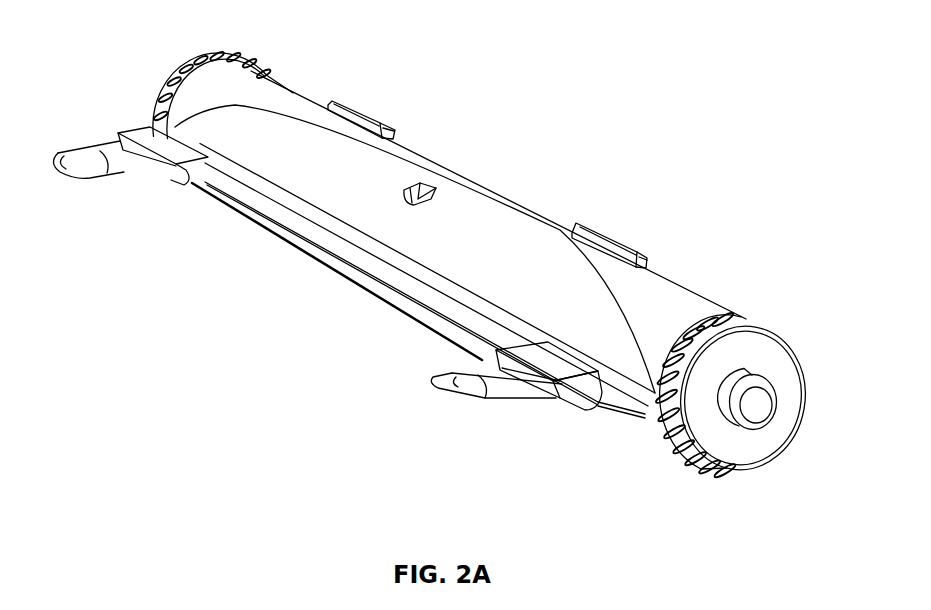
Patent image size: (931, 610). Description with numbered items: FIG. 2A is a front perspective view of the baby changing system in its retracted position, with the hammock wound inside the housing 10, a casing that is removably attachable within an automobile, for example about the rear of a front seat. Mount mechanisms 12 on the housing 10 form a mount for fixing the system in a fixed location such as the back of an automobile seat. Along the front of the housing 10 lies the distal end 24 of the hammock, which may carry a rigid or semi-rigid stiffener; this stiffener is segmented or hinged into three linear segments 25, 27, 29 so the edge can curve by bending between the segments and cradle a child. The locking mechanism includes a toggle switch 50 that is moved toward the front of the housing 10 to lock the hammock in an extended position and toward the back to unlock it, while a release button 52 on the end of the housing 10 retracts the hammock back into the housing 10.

The housing 10 is at (203, 54).
The mount mechanism 12 is at (362, 112).
The distal end 24 is at (375, 292).
The linear segment 25 is at (118, 135).
The linear segment 27 is at (232, 201).
The linear segment 29 is at (573, 396).
The toggle switch 50 is at (424, 186).
The release button 52 is at (757, 405).